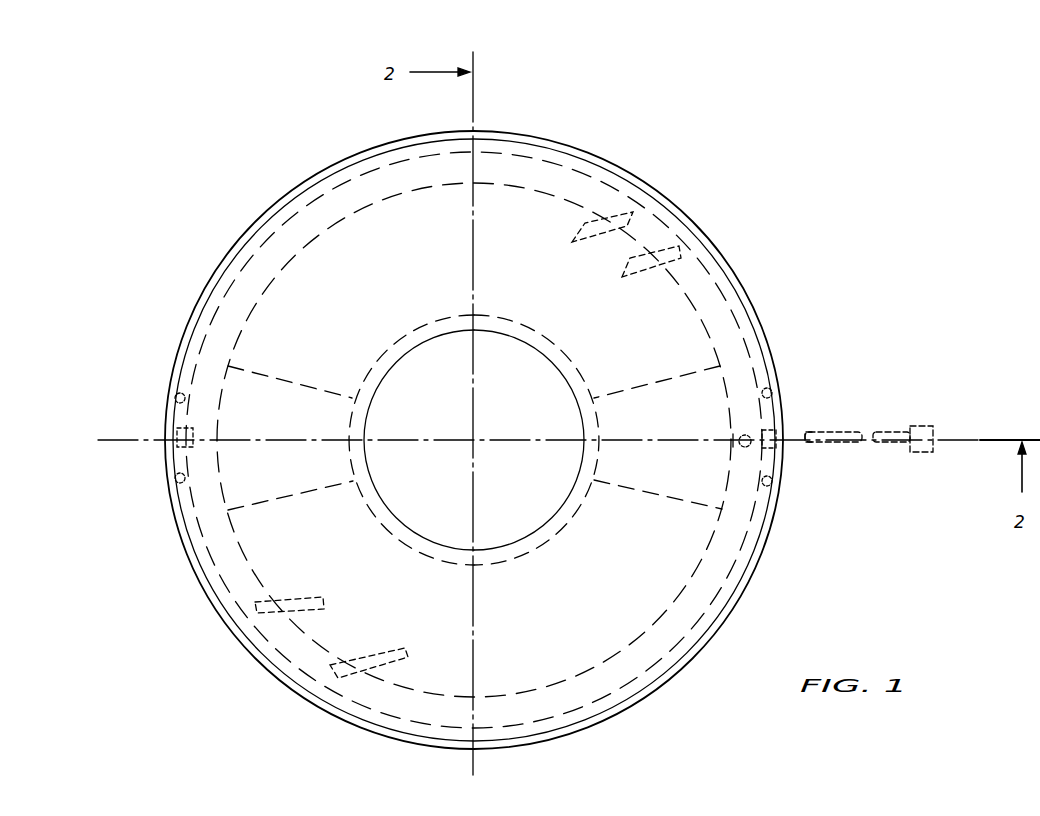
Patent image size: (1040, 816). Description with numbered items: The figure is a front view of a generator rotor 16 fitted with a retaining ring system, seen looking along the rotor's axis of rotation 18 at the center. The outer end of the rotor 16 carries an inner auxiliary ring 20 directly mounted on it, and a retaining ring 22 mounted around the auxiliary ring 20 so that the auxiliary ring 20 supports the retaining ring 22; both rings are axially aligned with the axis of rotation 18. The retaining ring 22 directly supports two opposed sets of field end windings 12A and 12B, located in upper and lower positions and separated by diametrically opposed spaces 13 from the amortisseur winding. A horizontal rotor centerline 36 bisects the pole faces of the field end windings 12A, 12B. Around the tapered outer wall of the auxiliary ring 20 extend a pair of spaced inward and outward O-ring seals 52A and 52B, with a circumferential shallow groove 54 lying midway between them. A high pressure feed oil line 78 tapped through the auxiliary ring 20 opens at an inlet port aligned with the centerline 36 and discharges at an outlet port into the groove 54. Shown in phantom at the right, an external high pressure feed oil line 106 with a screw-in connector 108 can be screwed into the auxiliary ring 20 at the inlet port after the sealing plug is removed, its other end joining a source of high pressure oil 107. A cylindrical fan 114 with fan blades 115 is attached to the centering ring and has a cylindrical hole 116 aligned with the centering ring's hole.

The field end winding 12A is at (474, 311).
The field end winding 12B is at (474, 568).
The diametrically opposed spaces 13 is at (475, 438).
The rotor 16 is at (411, 440).
The cylindrical hole 116 is at (536, 440).
The axis of rotation 18 is at (470, 444).
The rotor centerline 36 is at (520, 443).
The auxiliary ring 20 is at (613, 187).
The retaining ring 22 is at (710, 236).
The cylindrical fan 114 is at (231, 613).
The fan blades 115 is at (622, 276).
The inward O-ring seal 52A is at (178, 396).
The outward O-ring seal 52B is at (178, 480).
The circumferential shallow groove 54 is at (177, 437).
The high pressure feed oil line 78 is at (743, 448).
The external high pressure feed oil line 106 is at (826, 432).
The source of high pressure oil 107 is at (920, 426).
The screw-in connector 108 is at (806, 442).